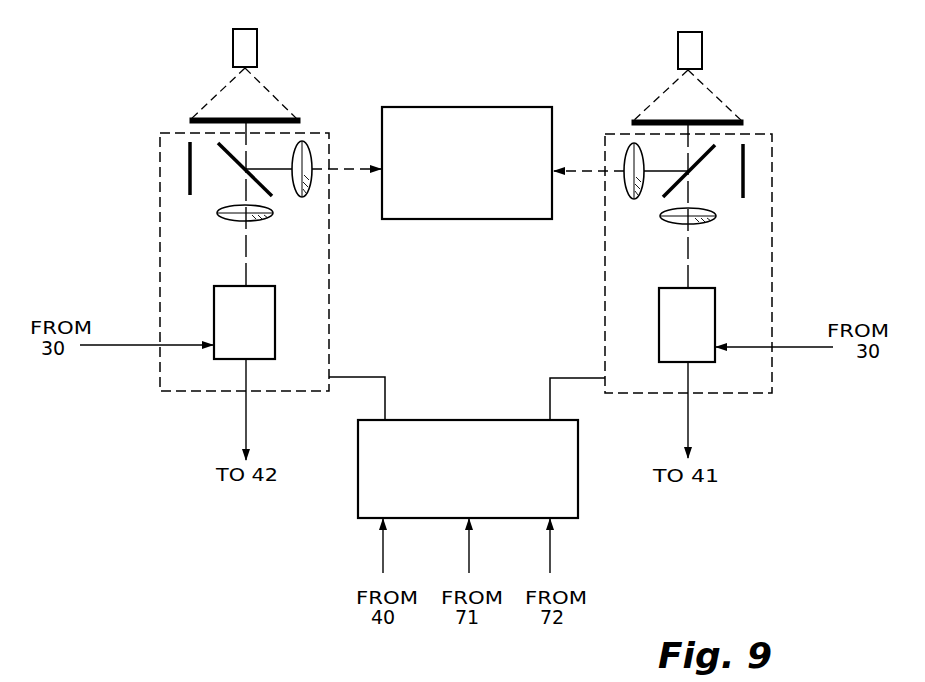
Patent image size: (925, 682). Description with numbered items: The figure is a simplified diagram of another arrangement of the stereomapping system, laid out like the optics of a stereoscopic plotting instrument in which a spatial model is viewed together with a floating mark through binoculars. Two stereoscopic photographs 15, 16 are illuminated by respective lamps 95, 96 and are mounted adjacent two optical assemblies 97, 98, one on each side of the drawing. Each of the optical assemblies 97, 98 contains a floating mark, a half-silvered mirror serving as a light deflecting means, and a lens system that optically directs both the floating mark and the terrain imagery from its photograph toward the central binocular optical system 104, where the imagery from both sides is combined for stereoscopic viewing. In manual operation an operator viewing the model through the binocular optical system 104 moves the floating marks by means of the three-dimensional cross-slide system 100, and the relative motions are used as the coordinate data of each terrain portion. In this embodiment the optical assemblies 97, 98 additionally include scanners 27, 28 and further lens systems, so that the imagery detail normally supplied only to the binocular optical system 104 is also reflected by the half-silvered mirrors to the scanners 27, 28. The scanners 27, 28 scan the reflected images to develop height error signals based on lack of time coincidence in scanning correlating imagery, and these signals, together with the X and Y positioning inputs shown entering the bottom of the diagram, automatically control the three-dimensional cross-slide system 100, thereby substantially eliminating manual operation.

The lamp 95 is at (257, 53).
The lamp 96 is at (702, 55).
The stereoscopic photograph 15 is at (267, 118).
The stereoscopic photograph 16 is at (718, 120).
The optical assembly 97 is at (329, 263).
The optical assembly 98 is at (772, 242).
The scanner 27 is at (275, 296).
The scanner 28 is at (715, 298).
The binocular optical system 104 is at (512, 107).
The three-dimensional cross-slide system 100 is at (480, 419).